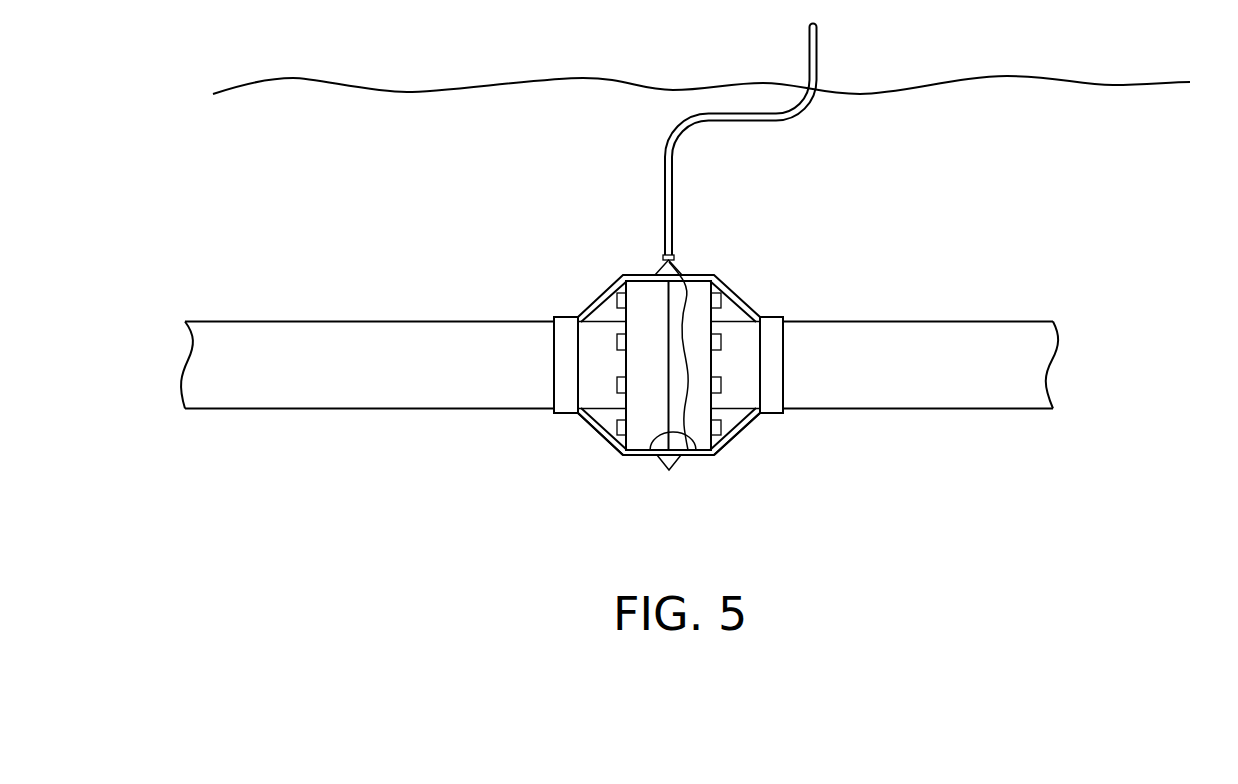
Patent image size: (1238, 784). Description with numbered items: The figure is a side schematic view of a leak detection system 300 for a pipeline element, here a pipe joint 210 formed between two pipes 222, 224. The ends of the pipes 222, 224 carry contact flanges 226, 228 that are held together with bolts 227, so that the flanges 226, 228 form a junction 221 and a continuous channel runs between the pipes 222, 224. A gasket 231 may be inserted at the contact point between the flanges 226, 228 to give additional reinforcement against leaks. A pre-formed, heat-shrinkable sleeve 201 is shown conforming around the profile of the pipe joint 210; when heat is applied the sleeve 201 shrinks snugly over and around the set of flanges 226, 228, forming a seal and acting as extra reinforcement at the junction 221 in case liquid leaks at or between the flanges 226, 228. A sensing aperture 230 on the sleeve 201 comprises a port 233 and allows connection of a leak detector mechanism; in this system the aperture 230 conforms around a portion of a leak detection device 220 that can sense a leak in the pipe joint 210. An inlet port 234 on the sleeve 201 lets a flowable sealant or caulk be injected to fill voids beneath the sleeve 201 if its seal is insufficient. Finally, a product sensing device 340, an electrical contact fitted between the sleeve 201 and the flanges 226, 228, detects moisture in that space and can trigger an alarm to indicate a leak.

The leak detection system 300 is at (240, 235).
The heat-shrinkable sleeve 201 is at (593, 301).
The pipe joint 210 is at (645, 293).
The leak detection device 220 is at (681, 136).
The junction 221 is at (693, 433).
The pipe 222 is at (390, 357).
The pipe 224 is at (973, 388).
The contact flange 226 is at (640, 430).
The bolt 227 is at (722, 302).
The contact flange 228 is at (732, 415).
The sensing aperture 230 is at (657, 267).
The gasket 231 is at (645, 430).
The port 233 is at (643, 282).
The inlet port 234 is at (668, 463).
The product sensing device 340 is at (692, 298).